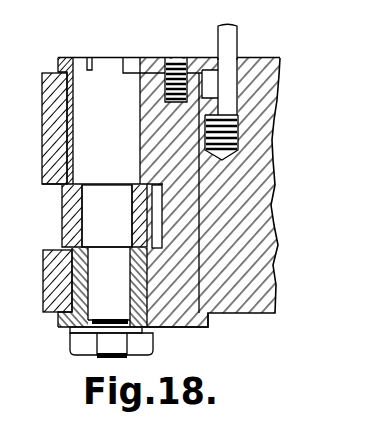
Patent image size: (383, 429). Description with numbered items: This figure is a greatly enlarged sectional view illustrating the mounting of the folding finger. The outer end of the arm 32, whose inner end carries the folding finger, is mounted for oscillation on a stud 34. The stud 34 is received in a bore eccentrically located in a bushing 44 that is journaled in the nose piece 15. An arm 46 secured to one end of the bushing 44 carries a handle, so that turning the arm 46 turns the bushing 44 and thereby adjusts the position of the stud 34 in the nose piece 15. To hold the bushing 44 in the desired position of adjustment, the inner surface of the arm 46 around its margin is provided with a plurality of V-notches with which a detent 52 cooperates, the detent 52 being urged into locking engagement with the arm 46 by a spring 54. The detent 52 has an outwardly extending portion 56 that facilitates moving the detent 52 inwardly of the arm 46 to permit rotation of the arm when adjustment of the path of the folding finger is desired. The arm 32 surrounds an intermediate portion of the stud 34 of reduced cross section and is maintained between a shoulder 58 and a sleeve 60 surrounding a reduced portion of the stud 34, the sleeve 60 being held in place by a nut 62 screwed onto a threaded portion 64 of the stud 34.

The nose piece 15 is at (41, 96).
The arm 46 is at (152, 57).
The outwardly extending portion 56 is at (238, 34).
The detent 52 is at (227, 106).
The spring 54 is at (238, 139).
The shoulder 58 is at (77, 193).
The stud 34 is at (83, 208).
The arm 32 is at (62, 229).
The bushing 44 is at (176, 326).
The sleeve 60 is at (82, 329).
The nut 62 is at (82, 349).
The threaded portion 64 is at (123, 355).